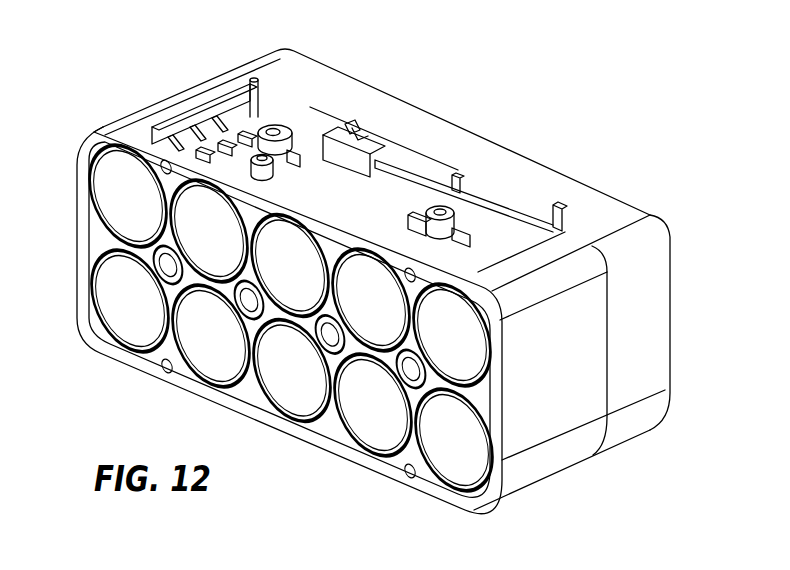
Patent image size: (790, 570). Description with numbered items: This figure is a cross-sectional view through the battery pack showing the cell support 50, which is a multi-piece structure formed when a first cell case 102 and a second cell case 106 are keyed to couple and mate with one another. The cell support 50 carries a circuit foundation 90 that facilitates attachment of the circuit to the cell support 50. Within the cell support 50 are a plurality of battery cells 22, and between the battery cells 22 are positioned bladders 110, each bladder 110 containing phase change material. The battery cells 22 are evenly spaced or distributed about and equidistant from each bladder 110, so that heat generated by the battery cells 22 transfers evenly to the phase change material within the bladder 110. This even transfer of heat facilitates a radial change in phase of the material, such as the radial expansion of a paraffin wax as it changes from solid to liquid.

The battery cell 22 is at (95, 251).
The cell support 50 is at (180, 102).
The circuit foundation 90 is at (240, 85).
The cell case 102 is at (545, 432).
The cell case 106 is at (657, 284).
The bladder 110 is at (167, 372).